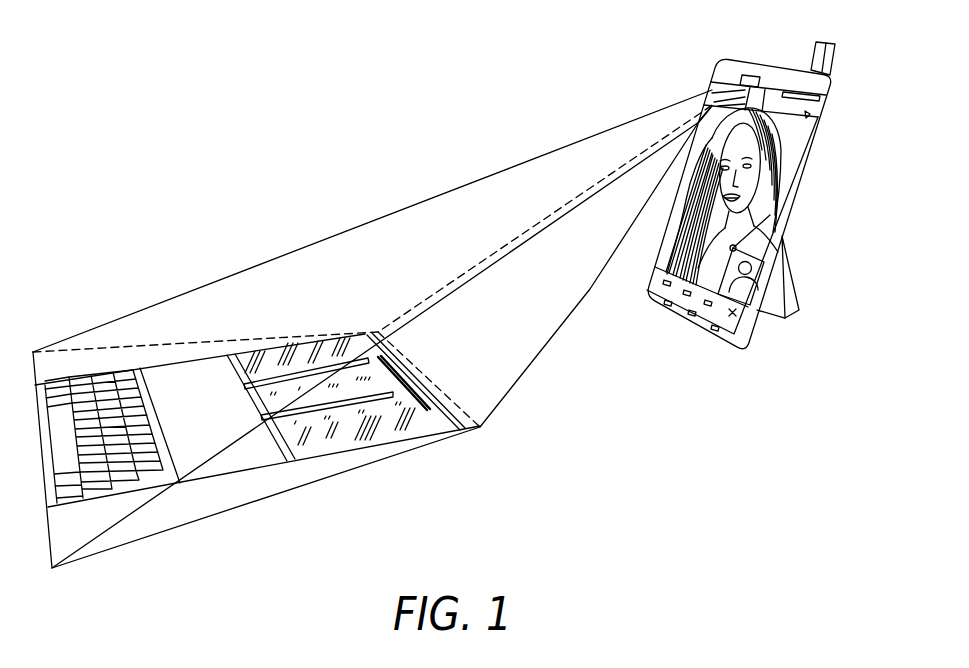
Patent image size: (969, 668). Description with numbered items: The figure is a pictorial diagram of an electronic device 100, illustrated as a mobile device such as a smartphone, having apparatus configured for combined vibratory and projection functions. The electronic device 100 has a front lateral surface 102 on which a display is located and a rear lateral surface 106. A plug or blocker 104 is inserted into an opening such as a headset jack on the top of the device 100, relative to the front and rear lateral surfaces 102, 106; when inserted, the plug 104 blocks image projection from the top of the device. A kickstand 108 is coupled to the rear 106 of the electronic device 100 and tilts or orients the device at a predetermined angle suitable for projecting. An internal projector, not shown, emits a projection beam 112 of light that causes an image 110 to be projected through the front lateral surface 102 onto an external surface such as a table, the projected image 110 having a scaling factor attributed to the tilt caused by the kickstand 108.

The electronic device 100 is at (676, 78).
The front lateral surface 102 is at (818, 100).
The plug 104 is at (823, 42).
The rear lateral surface 106 is at (800, 170).
The kickstand 108 is at (793, 278).
The image 110 is at (207, 385).
The projection beam 112 is at (250, 268).